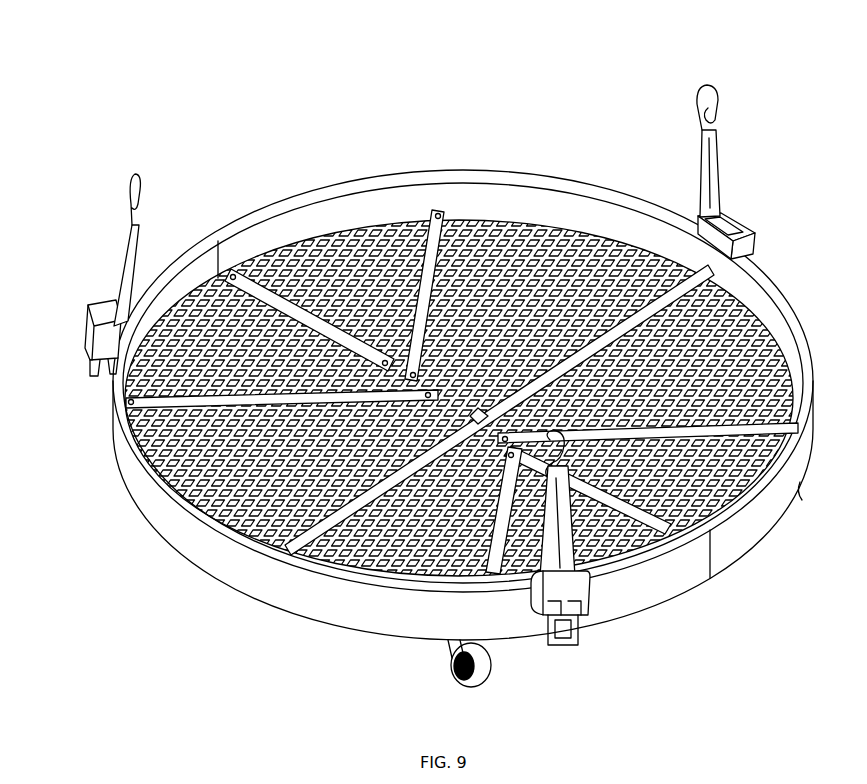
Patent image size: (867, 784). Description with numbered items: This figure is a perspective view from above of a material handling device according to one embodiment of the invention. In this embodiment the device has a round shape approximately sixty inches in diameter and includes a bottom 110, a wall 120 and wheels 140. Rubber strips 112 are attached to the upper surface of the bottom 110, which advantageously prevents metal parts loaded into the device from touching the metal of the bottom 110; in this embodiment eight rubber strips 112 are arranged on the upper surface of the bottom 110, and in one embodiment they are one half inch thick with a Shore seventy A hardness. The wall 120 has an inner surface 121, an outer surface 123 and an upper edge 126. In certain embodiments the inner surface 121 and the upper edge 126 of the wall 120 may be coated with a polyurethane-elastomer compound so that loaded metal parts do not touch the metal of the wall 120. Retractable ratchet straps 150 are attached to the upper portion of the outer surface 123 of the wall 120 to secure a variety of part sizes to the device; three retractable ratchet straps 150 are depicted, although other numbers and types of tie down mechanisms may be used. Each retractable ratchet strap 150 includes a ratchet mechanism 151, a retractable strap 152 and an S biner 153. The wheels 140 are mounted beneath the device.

The bottom 110 is at (187, 490).
The rubber strips 112 is at (434, 313).
The wall 120 is at (463, 374).
The inner surface 121 is at (528, 203).
The outer surface 123 is at (346, 605).
The upper edge 126 is at (513, 163).
The wheels 140 is at (487, 660).
The retractable ratchet straps 150 is at (433, 385).
The ratchet mechanism 151 is at (750, 232).
The retractable strap 152 is at (713, 150).
The S biner 153 is at (710, 103).